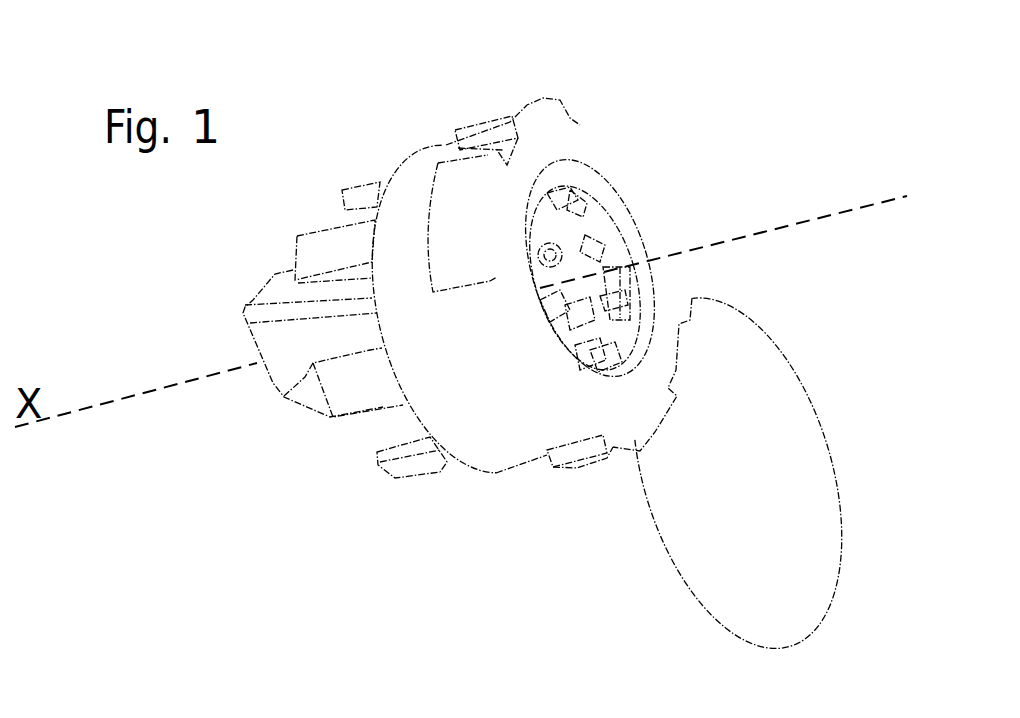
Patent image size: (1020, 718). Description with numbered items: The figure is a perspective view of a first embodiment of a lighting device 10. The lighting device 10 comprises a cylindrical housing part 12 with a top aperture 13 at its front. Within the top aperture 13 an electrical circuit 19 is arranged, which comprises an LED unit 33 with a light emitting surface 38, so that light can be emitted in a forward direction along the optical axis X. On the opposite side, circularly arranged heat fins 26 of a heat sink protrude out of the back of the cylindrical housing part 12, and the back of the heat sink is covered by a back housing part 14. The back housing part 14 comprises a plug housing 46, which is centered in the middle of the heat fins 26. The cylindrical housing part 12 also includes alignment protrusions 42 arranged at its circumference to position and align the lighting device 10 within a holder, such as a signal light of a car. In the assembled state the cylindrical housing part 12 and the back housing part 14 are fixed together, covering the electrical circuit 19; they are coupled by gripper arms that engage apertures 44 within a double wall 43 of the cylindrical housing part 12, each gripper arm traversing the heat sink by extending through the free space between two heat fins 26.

The lighting device 10 is at (698, 102).
The cylindrical housing part 12 is at (487, 426).
The top aperture 13 is at (606, 224).
The back housing part 14 is at (285, 380).
The electrical circuit 19 is at (590, 244).
The heat fins 26 is at (345, 400).
The LED unit 33 is at (571, 275).
The light emitting surface 38 is at (548, 298).
The alignment protrusions 42 is at (451, 180).
The double wall 43 is at (633, 288).
The apertures 44 is at (618, 305).
The plug housing 46 is at (265, 338).